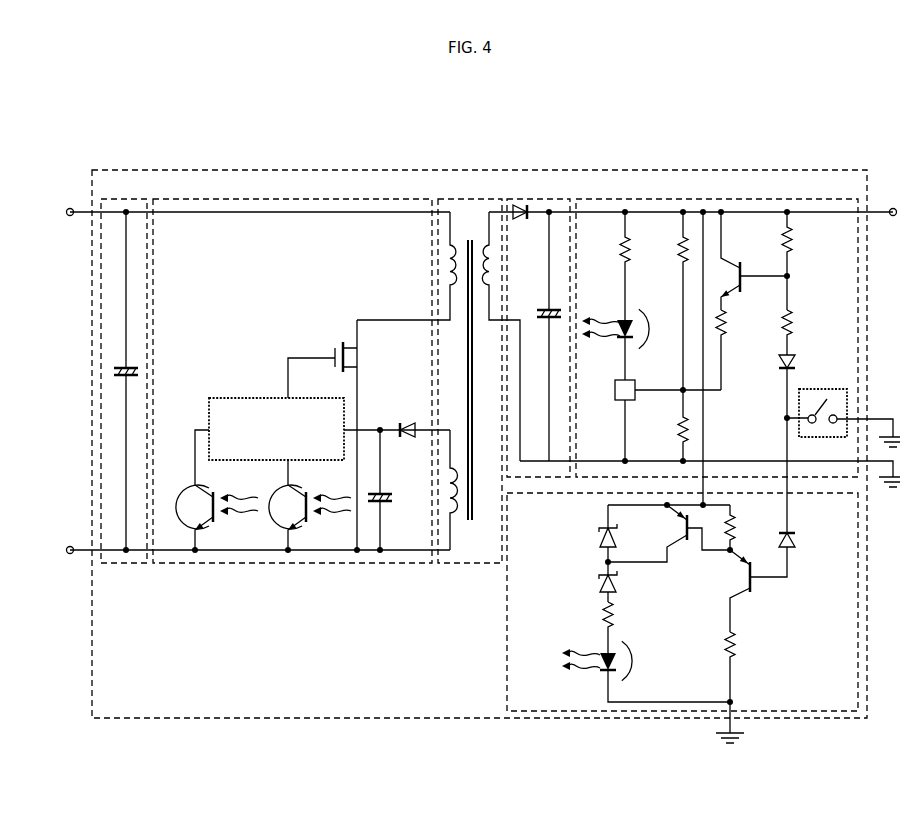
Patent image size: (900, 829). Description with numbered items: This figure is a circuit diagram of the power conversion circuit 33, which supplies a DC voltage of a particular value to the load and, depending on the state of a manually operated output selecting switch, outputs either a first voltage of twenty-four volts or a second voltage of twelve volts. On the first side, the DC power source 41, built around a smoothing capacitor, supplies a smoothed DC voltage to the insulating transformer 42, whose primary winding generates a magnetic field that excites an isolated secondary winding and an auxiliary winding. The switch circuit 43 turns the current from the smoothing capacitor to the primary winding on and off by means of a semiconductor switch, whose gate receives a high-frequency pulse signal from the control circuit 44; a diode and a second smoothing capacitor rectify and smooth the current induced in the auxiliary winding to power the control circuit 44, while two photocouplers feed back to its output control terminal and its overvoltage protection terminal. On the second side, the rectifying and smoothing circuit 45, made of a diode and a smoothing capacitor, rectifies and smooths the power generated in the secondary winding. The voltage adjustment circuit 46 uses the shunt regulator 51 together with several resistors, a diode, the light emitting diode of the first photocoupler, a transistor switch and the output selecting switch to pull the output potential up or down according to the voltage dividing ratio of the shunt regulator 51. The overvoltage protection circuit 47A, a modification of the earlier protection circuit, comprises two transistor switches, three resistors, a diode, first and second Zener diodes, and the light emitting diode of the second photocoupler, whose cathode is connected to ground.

The power conversion circuit 33 is at (222, 170).
The DC power source 41 is at (117, 199).
The insulating transformer 42 is at (468, 199).
The switch circuit 43 is at (367, 199).
The control circuit 44 is at (313, 398).
The rectifying and smoothing circuit 45 is at (552, 199).
The voltage adjustment circuit 46 is at (605, 199).
The overvoltage protection circuit 47A is at (507, 637).
The shunt regulator 51 is at (614, 391).